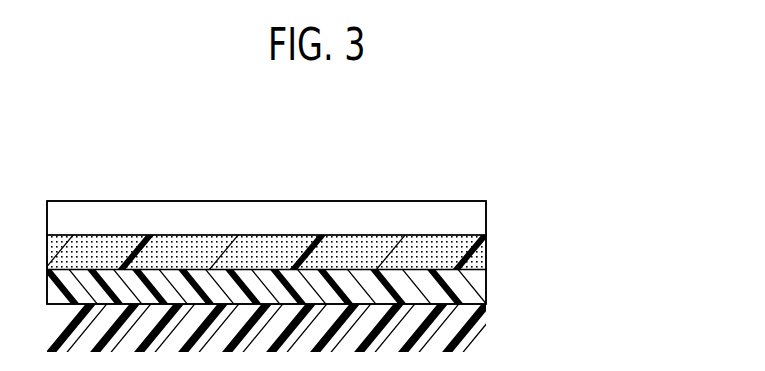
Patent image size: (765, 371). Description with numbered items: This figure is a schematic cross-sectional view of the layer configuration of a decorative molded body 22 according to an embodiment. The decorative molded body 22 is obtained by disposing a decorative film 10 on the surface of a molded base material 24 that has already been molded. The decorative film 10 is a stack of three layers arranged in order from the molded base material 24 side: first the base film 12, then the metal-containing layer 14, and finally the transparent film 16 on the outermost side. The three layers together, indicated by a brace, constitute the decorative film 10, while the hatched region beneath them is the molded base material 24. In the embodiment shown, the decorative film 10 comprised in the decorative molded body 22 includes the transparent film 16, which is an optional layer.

The decorative film 10 is at (600, 196).
The base film 12 is at (487, 287).
The metal-containing layer 14 is at (487, 242).
The transparent film 16 is at (487, 206).
The decorative molded body 22 is at (417, 172).
The molded base material 24 is at (488, 333).